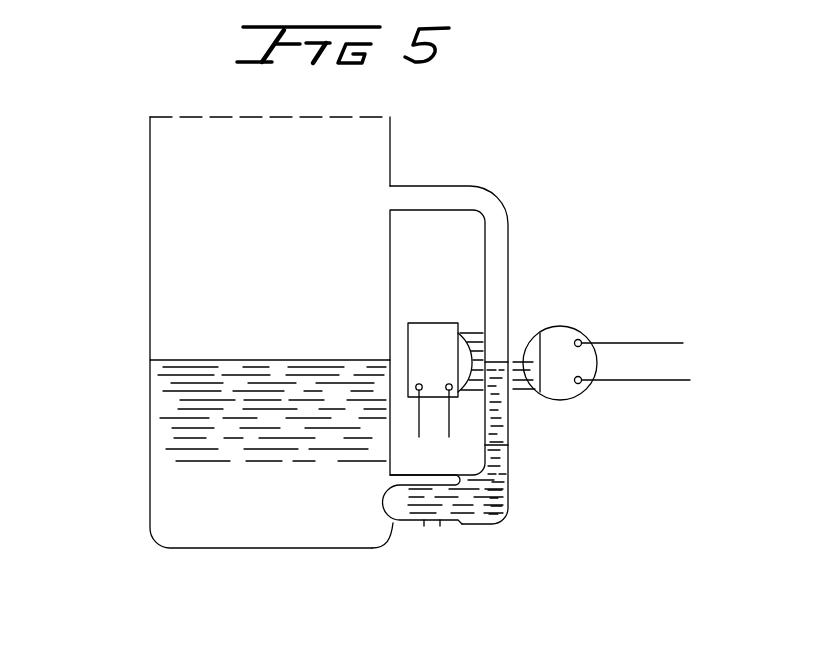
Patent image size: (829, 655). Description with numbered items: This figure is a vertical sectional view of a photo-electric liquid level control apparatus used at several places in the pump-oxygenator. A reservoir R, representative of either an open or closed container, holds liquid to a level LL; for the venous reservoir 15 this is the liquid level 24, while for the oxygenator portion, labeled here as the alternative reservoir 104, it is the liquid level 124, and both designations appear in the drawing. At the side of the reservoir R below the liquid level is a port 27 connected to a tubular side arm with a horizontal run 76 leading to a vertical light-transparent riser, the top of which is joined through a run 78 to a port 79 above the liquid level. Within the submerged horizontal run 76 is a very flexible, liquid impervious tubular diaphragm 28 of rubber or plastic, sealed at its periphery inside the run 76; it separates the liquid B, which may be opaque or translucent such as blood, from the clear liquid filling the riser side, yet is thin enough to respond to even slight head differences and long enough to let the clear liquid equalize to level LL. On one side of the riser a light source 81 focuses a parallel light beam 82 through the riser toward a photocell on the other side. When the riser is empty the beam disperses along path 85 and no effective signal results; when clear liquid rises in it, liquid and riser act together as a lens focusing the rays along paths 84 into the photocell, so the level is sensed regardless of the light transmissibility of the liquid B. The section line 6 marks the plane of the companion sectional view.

The venous reservoir 15 is at (221, 332).
The tank 104 is at (148, 283).
The liquid level 24 is at (282, 439).
The liquid level 124 is at (185, 364).
The port 27 is at (398, 530).
The diaphragm 28 is at (428, 524).
The horizontal run 76 is at (466, 526).
The run 78 is at (482, 188).
The port 79 is at (400, 198).
The light source 81 is at (434, 354).
The light beam 82 is at (480, 337).
The light ray paths 84 is at (601, 381).
The dispersed light path 85 is at (517, 391).
The section line 6- 6 is at (577, 286).
The reservoir R is at (147, 252).
The liquid level LL is at (166, 365).
The liquid B is at (285, 499).